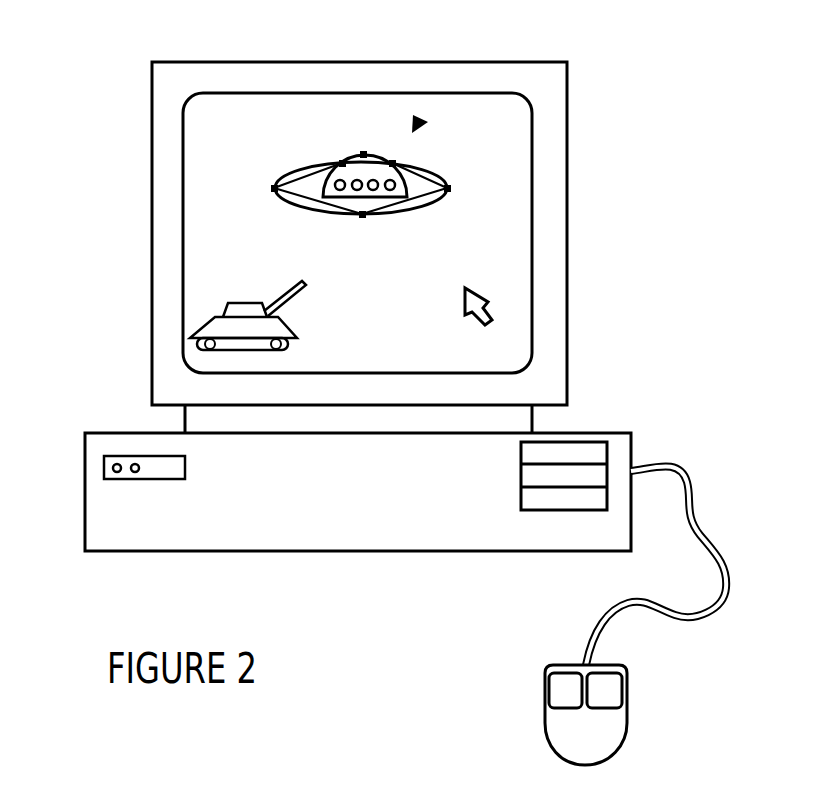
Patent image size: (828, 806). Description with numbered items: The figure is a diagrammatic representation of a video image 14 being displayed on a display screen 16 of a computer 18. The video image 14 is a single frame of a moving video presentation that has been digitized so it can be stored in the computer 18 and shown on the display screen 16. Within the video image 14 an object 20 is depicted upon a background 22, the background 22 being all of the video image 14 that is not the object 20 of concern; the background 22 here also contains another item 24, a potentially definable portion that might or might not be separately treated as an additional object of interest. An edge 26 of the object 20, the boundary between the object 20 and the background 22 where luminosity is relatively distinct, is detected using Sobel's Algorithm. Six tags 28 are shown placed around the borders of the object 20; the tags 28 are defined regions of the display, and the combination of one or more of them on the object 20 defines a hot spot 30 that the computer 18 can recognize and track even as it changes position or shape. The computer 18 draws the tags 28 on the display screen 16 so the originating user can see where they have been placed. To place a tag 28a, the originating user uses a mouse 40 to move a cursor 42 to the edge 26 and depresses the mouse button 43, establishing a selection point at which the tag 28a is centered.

The video image 14 is at (150, 42).
The display screen 16 is at (552, 118).
The computer 18 is at (360, 513).
The object 20 is at (387, 175).
The background 22 is at (233, 128).
The other item 24 is at (287, 328).
The edge 26 is at (427, 168).
The tags 28 is at (342, 162).
The tag 28a is at (360, 216).
The hot spot 30 is at (427, 121).
The mouse 40 is at (542, 728).
The cursor 42 is at (463, 308).
The mouse button 43 is at (565, 685).